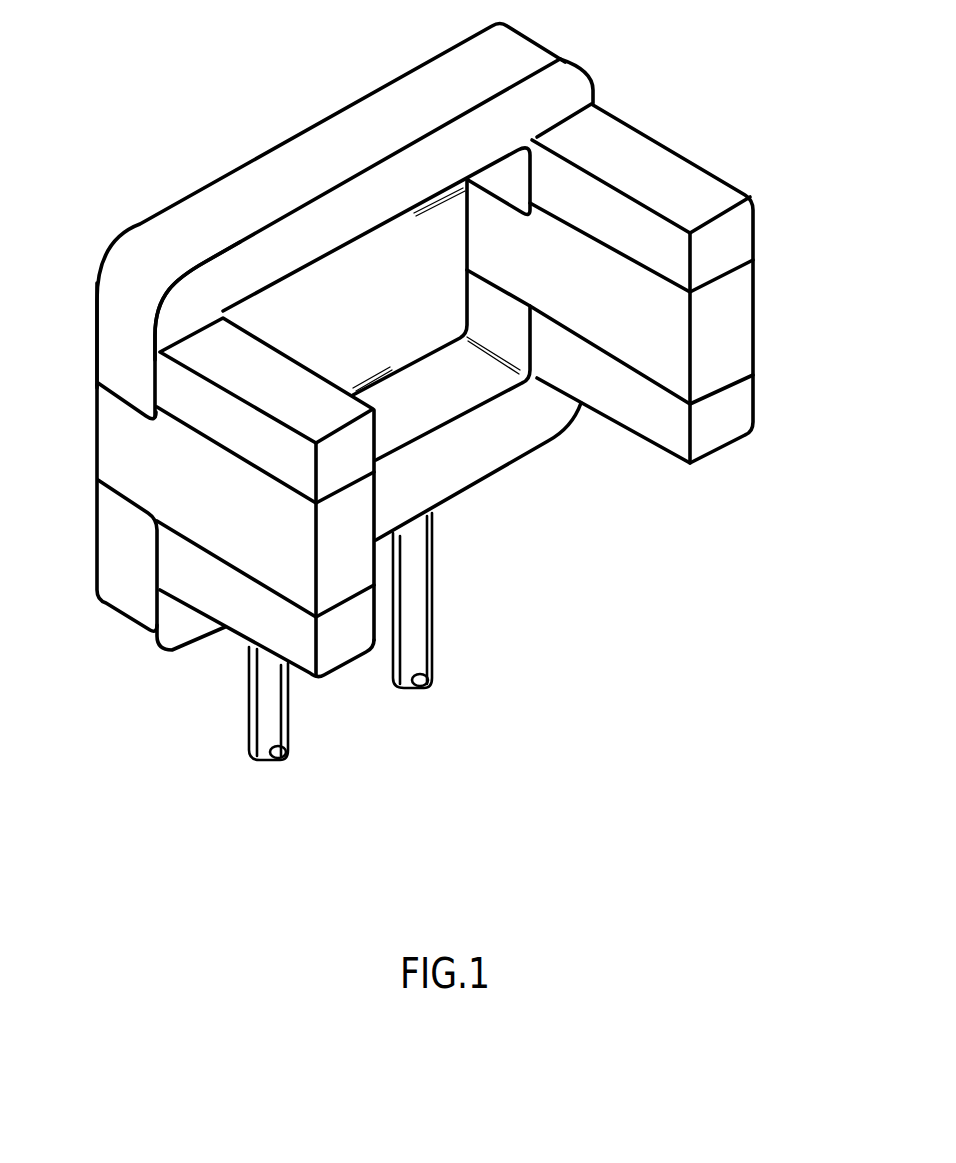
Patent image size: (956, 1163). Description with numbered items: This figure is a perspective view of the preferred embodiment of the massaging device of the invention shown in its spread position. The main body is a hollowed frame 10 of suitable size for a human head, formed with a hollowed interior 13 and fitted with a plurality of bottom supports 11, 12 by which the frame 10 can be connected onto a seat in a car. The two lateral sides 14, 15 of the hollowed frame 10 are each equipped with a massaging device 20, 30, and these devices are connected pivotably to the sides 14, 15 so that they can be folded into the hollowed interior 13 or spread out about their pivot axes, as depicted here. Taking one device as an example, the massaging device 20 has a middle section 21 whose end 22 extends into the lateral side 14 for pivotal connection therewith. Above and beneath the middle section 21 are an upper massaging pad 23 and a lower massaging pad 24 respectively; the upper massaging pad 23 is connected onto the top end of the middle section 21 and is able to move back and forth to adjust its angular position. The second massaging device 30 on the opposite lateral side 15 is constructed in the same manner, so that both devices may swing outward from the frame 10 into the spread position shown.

The hollowed frame 10 is at (323, 133).
The bottom support 11 is at (290, 720).
The bottom support 12 is at (432, 615).
The hollowed interior 13 is at (422, 383).
The lateral side 14 is at (110, 340).
The lateral side 15 is at (597, 82).
The massaging device 20 is at (201, 552).
The middle section 21 is at (226, 540).
The end 22 is at (110, 440).
The upper massaging pad 23 is at (198, 347).
The lower massaging pad 24 is at (263, 637).
The massaging device 30 is at (760, 326).